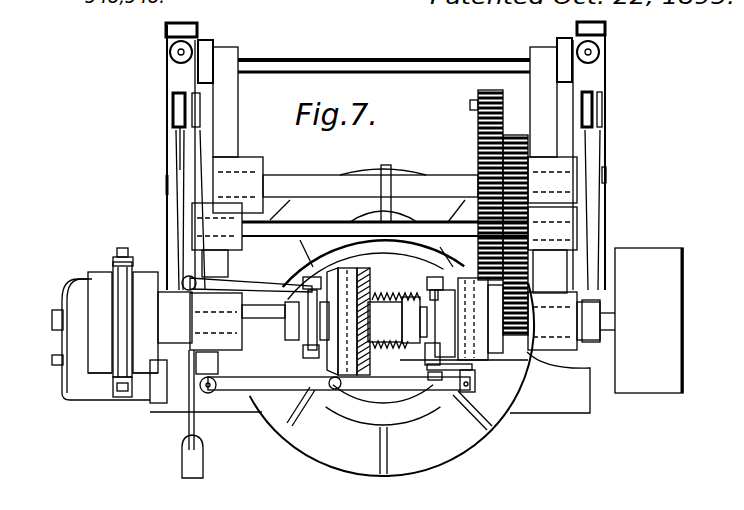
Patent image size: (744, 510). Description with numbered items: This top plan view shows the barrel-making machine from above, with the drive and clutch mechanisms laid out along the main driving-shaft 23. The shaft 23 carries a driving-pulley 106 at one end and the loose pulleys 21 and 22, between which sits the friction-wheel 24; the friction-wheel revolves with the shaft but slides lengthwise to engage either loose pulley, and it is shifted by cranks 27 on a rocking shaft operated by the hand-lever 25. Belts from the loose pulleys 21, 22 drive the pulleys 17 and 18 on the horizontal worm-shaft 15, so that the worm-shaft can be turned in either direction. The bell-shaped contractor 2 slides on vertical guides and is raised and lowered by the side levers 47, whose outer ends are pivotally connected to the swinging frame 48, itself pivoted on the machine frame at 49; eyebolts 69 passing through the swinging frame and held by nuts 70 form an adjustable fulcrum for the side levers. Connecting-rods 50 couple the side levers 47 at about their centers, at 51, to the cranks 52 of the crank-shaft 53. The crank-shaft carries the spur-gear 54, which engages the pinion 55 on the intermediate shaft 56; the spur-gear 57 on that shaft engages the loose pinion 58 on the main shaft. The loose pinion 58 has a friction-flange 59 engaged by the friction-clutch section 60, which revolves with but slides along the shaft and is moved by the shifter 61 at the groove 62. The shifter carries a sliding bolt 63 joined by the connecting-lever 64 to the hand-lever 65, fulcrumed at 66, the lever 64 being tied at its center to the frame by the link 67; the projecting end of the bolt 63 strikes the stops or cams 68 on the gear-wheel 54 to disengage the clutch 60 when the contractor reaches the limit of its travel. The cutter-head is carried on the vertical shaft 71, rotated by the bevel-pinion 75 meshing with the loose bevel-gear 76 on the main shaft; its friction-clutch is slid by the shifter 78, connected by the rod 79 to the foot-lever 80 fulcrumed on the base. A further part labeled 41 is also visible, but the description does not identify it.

The bell-shaped contractor 2 is at (392, 322).
The horizontal shaft 15 is at (58, 363).
The driving-pulley 17 is at (100, 384).
The driving-pulley 18 is at (145, 386).
The loose pulley 21 is at (100, 322).
The loose pulley 22 is at (145, 322).
The main driving-shaft 23 is at (221, 321).
The friction-wheel 24 is at (113, 266).
The hand-lever 25 is at (120, 400).
The cranks 27 is at (129, 257).
The bracket 41 is at (448, 361).
The side levers 47 is at (386, 183).
The swinging frame 48 is at (235, 20).
The pivot of swinging frame 49 is at (557, 60).
The connecting-rods 50 is at (181, 147).
The connection of connecting-rods to side levers 51 is at (167, 183).
The cranks 52 is at (385, 185).
The crank-shaft 53 is at (370, 193).
The spur-gear 54 is at (491, 177).
The pinion 55 is at (485, 210).
The intermediate shaft 56 is at (385, 229).
The spur-gear 57 is at (515, 140).
The loose pinion 58 is at (507, 352).
The friction-flange 59 is at (480, 319).
The friction-clutch section 60 is at (445, 323).
The shifter 61 is at (438, 290).
The groove 62 is at (428, 296).
The sliding bolt 63 is at (475, 381).
The connecting-lever 64 is at (339, 383).
The hand-lever 65 is at (214, 392).
The fulcrum of hand-lever 66 is at (207, 363).
The link 67 is at (334, 392).
The stops or cams 68 is at (469, 98).
The eyebolts 69 is at (181, 23).
The nuts 70 is at (320, 321).
The vertical shaft 71 is at (311, 317).
The bevel-pinion 75 is at (392, 320).
The loose bevel-gear 76 is at (348, 321).
The shifter 78 is at (251, 318).
The rod 79 is at (193, 279).
The foot-lever 80 is at (192, 414).
The driving-pulley 106 is at (649, 320).